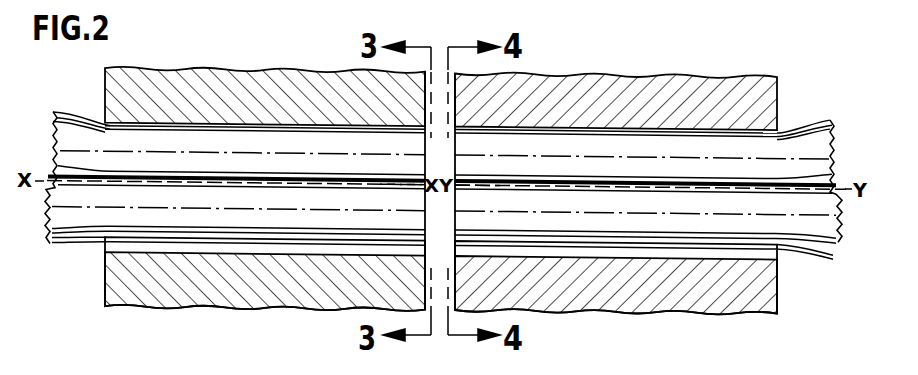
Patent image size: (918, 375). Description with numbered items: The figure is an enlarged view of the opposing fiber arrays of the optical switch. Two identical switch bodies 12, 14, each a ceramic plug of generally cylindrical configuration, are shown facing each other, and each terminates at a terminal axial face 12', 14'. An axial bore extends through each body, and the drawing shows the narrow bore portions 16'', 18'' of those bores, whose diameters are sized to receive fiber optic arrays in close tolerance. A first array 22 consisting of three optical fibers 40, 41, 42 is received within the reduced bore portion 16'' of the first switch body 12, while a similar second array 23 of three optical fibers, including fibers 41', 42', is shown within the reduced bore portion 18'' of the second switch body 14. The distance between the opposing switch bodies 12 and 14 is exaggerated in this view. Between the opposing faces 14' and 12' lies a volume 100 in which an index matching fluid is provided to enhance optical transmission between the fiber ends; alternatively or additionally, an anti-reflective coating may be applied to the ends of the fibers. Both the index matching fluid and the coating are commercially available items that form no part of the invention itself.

The first switch body 12 is at (265, 169).
The second switch body 14 is at (616, 174).
The terminal axial face of first switch body 12' is at (381, 178).
The terminal axial face of second switch body 14' is at (503, 179).
The narrow bore portion of first switch body 16'' is at (265, 80).
The narrow bore portion of second switch body 18'' is at (616, 86).
The first optical fiber array 22 is at (92, 110).
The second optical fiber array 23 is at (815, 110).
The optical fiber 40 is at (70, 224).
The optical fiber 41 is at (71, 100).
The optical fiber 41' is at (804, 91).
The optical fiber 42 is at (36, 203).
The optical fiber 42' is at (848, 169).
The volume between opposing faces 100 is at (437, 288).